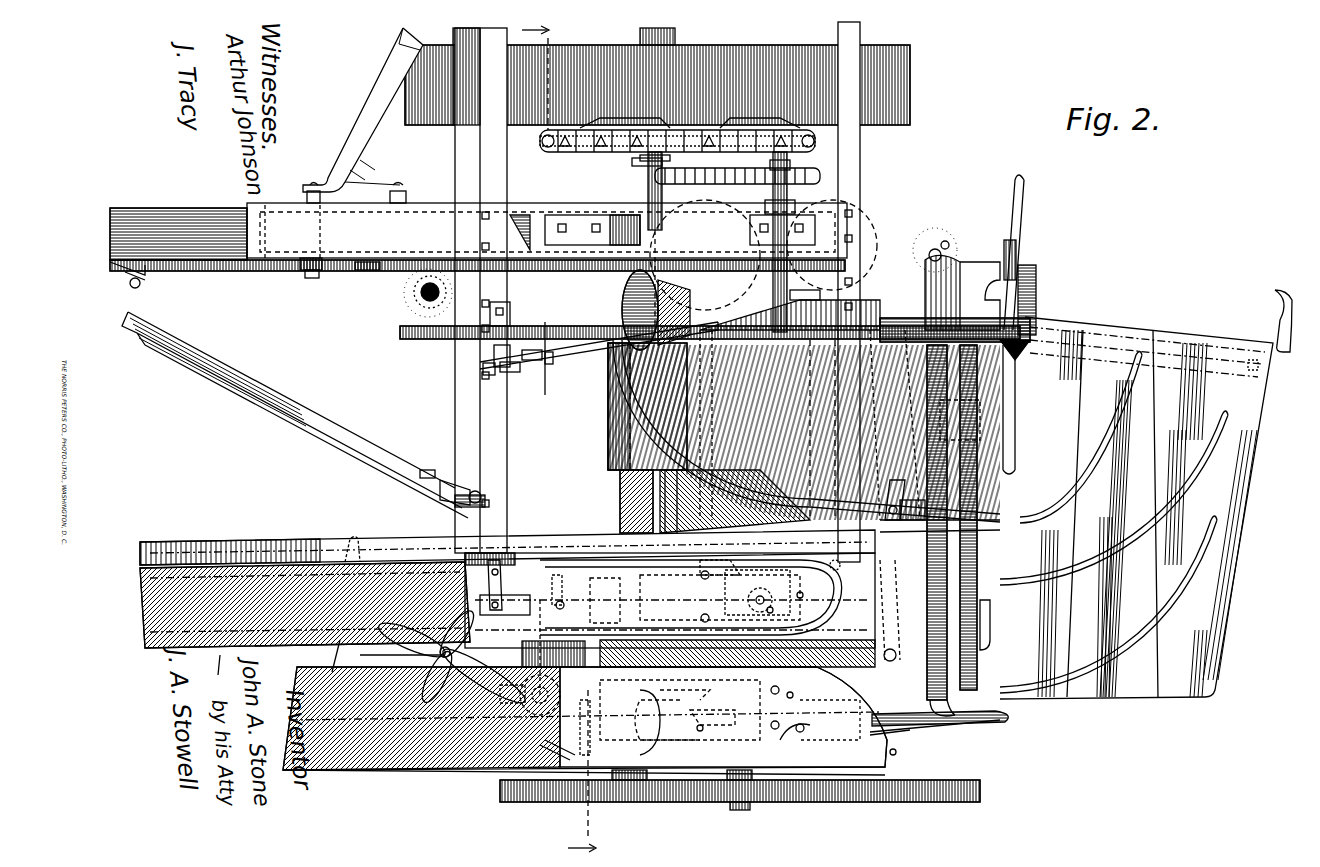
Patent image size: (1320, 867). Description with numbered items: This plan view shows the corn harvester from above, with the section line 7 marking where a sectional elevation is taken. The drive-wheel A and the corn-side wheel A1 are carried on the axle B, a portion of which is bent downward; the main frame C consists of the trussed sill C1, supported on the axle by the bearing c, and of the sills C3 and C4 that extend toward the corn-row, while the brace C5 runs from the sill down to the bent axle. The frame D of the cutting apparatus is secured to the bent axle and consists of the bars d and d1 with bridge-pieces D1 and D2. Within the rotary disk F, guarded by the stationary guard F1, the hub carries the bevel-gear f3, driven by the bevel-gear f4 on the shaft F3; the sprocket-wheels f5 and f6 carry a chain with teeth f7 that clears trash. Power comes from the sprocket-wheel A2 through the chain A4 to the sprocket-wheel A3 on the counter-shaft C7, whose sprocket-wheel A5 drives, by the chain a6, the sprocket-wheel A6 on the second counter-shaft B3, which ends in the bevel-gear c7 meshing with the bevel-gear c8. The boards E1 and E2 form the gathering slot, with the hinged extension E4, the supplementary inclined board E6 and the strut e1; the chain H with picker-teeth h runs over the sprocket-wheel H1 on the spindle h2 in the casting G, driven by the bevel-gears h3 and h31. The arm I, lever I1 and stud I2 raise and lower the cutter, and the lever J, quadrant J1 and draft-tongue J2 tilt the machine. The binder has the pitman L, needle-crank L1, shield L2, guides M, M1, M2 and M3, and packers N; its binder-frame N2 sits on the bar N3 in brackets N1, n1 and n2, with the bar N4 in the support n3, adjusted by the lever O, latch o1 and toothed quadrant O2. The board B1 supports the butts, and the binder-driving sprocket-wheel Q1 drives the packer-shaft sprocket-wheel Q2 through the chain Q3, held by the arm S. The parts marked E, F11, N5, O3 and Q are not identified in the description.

The section line 7 is at (565, 434).
The drive-wheel A is at (905, 95).
The corn-side wheel A1 is at (975, 802).
The sprocket-wheel A2 is at (575, 152).
The sprocket-wheel A3 is at (815, 140).
The chain A4 is at (582, 130).
The sprocket-wheel A5 is at (812, 176).
The sprocket-wheel A6 is at (635, 162).
The chain a6 is at (737, 181).
The axle B is at (648, 186).
The board B1 is at (618, 478).
The second counter-shaft B3 is at (763, 255).
The bearing c is at (678, 254).
The main frame C is at (575, 410).
The trussed sill C1 is at (547, 230).
The front overreaching sill C3 is at (458, 365).
The rear overreaching sill C4 is at (860, 142).
The brace C5 is at (366, 272).
The counter-shaft C7 is at (790, 292).
The bevel-gear c7 is at (705, 685).
The bevel-gear c8 is at (696, 738).
The bar d is at (531, 704).
The bar d1 is at (496, 587).
The frame of the cutting apparatus D is at (723, 717).
The bridge-piece D1 is at (631, 722).
The bridge-piece D2 is at (830, 725).
The side beam E is at (507, 610).
The board E1 is at (342, 539).
The second board E2 is at (490, 770).
The hinged extension E4 is at (799, 738).
The supplementary inclined board E6 is at (408, 562).
The strut e1 is at (520, 555).
The rotary disk F is at (488, 672).
The stationary guard F1 is at (625, 612).
The fan shaft bearing F11 is at (567, 600).
The shaft F3 is at (735, 722).
The bevel-gear f3 is at (544, 746).
The bevel-gear f4 is at (523, 688).
The sprocket-wheel f5 is at (605, 525).
The sprocket-wheel f6 is at (580, 727).
The teeth f7 is at (559, 582).
The casting G is at (698, 582).
The picker-teeth h is at (283, 658).
The chain H is at (280, 655).
The sprocket-wheel H1 is at (760, 606).
The spindle h2 is at (757, 592).
The bevel-gear h3 is at (802, 603).
The bevel-gear h31 is at (727, 552).
The arm I is at (625, 780).
The lever I1 is at (892, 734).
The stud I2 is at (739, 803).
The lever J is at (355, 262).
The quadrant J1 is at (310, 258).
The draft-tongue J2 is at (178, 234).
The pitman L is at (636, 310).
The needle-crank L1 is at (610, 412).
The shield L2 is at (612, 440).
The guide M is at (985, 640).
The guide M1 is at (1152, 640).
The guide M2 is at (1081, 438).
The guide M3 is at (1198, 478).
The packers N is at (1022, 228).
The bracket N1 is at (1000, 560).
The bracket n1 is at (878, 305).
The binder-frame N2 is at (733, 300).
The bracket n2 is at (515, 322).
The bar N3 is at (552, 325).
The support n3 is at (1038, 398).
The bar N4 is at (899, 610).
The rod N5 is at (930, 525).
The lever O is at (500, 368).
The latch o1 is at (493, 358).
The toothed quadrant O2 is at (561, 369).
The lever link O3 is at (566, 362).
The spring Q is at (995, 606).
The binder-driving sprocket-wheel Q1 is at (900, 755).
The packer-shaft sprocket-wheel Q2 is at (905, 478).
The chain Q3 is at (895, 647).
The arm S is at (838, 562).